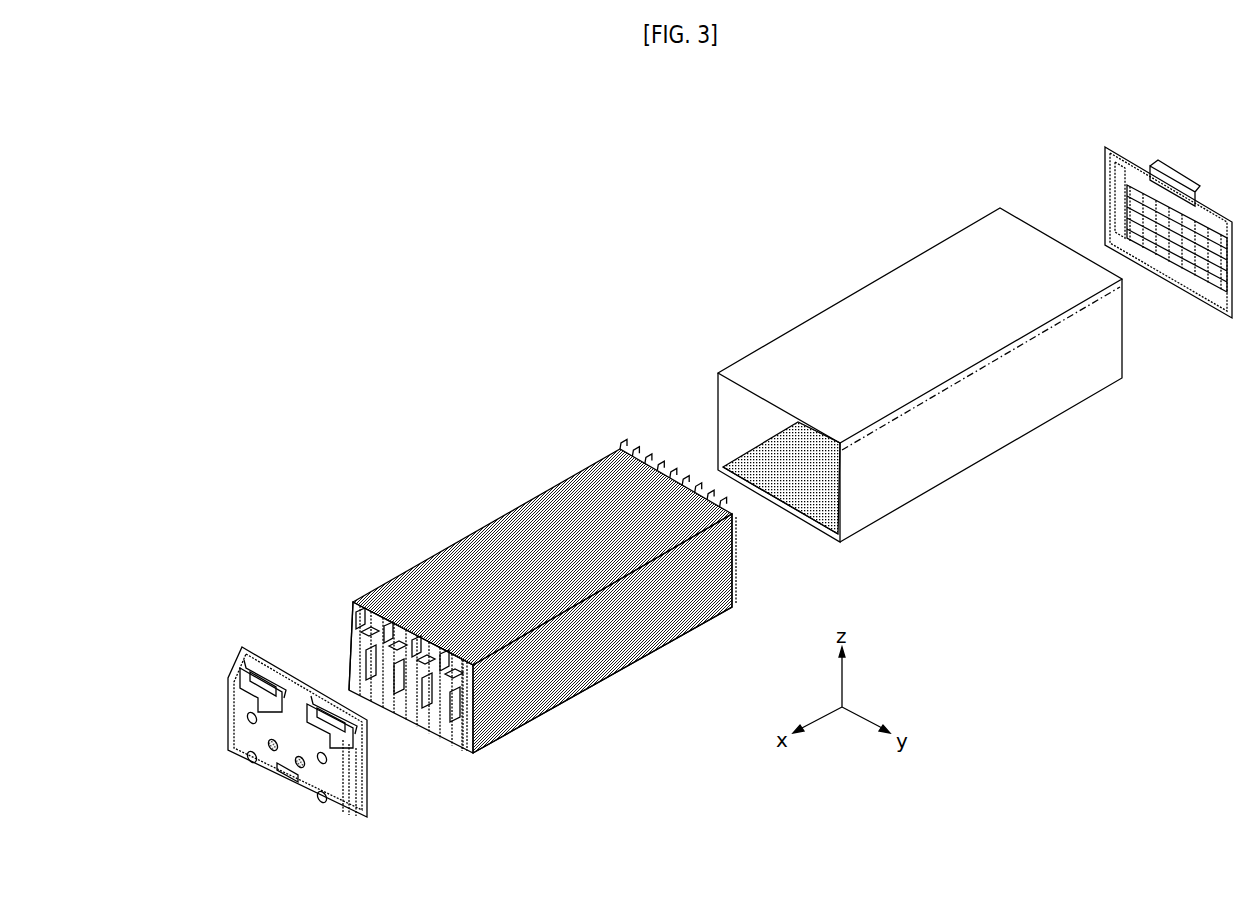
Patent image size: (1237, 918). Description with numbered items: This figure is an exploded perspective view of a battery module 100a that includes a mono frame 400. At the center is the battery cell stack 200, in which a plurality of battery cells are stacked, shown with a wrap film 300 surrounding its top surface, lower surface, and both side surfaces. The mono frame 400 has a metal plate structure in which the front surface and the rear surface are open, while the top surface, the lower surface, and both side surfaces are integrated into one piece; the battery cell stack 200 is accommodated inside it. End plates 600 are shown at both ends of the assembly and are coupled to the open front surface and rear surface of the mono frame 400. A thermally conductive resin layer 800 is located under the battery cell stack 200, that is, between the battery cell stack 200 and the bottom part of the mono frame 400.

The battery module 100a is at (542, 285).
The battery cell stack 200 is at (448, 574).
The wrap film 300 is at (577, 670).
The mono frame 400 is at (1002, 420).
The end plate 600 is at (240, 732).
The thermally conductive resin layer 800 is at (810, 500).